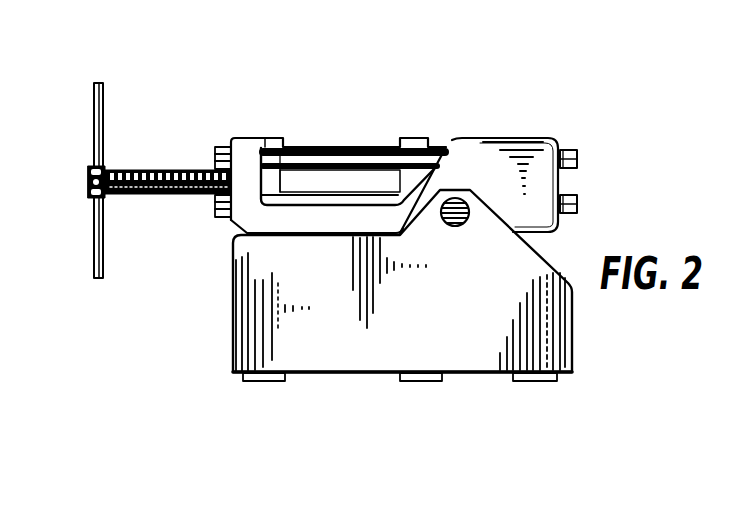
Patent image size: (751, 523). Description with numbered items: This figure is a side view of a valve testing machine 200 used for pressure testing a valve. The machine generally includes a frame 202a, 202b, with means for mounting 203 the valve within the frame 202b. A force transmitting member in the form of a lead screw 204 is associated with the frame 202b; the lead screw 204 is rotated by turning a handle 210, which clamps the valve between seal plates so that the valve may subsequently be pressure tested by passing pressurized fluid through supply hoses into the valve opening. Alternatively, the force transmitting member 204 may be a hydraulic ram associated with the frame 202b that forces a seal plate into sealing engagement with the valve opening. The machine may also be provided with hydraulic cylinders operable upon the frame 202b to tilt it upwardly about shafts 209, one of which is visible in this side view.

The valve testing machine 200 is at (319, 223).
The frame 202a is at (233, 348).
The frame 202b is at (253, 137).
The means for mounting 203 is at (244, 130).
The lead screw 204 is at (132, 170).
The shaft 209 is at (455, 228).
The handle 210 is at (93, 243).